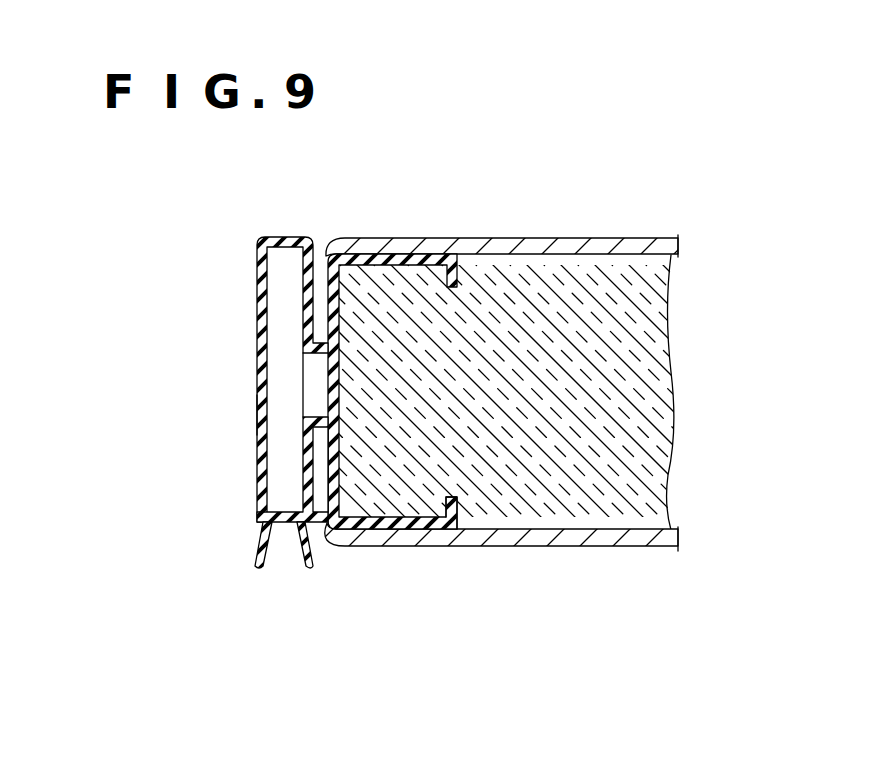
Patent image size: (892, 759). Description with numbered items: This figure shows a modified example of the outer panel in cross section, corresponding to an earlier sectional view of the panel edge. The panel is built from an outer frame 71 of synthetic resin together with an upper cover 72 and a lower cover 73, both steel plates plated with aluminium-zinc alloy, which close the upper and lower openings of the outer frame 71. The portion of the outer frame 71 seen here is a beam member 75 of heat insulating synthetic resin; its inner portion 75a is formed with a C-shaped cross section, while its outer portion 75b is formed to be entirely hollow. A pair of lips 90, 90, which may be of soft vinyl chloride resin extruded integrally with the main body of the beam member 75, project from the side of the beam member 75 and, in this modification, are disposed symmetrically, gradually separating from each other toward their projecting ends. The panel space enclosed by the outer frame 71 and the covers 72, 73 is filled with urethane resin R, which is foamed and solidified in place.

The outer frame 71 is at (351, 418).
The upper cover 72 is at (577, 246).
The lower cover 73 is at (585, 540).
The beam member 75 is at (356, 418).
The inner portion 75a is at (452, 490).
The outer portion 75b is at (260, 416).
The lip 90 is at (256, 554).
The urethane resin R is at (650, 367).